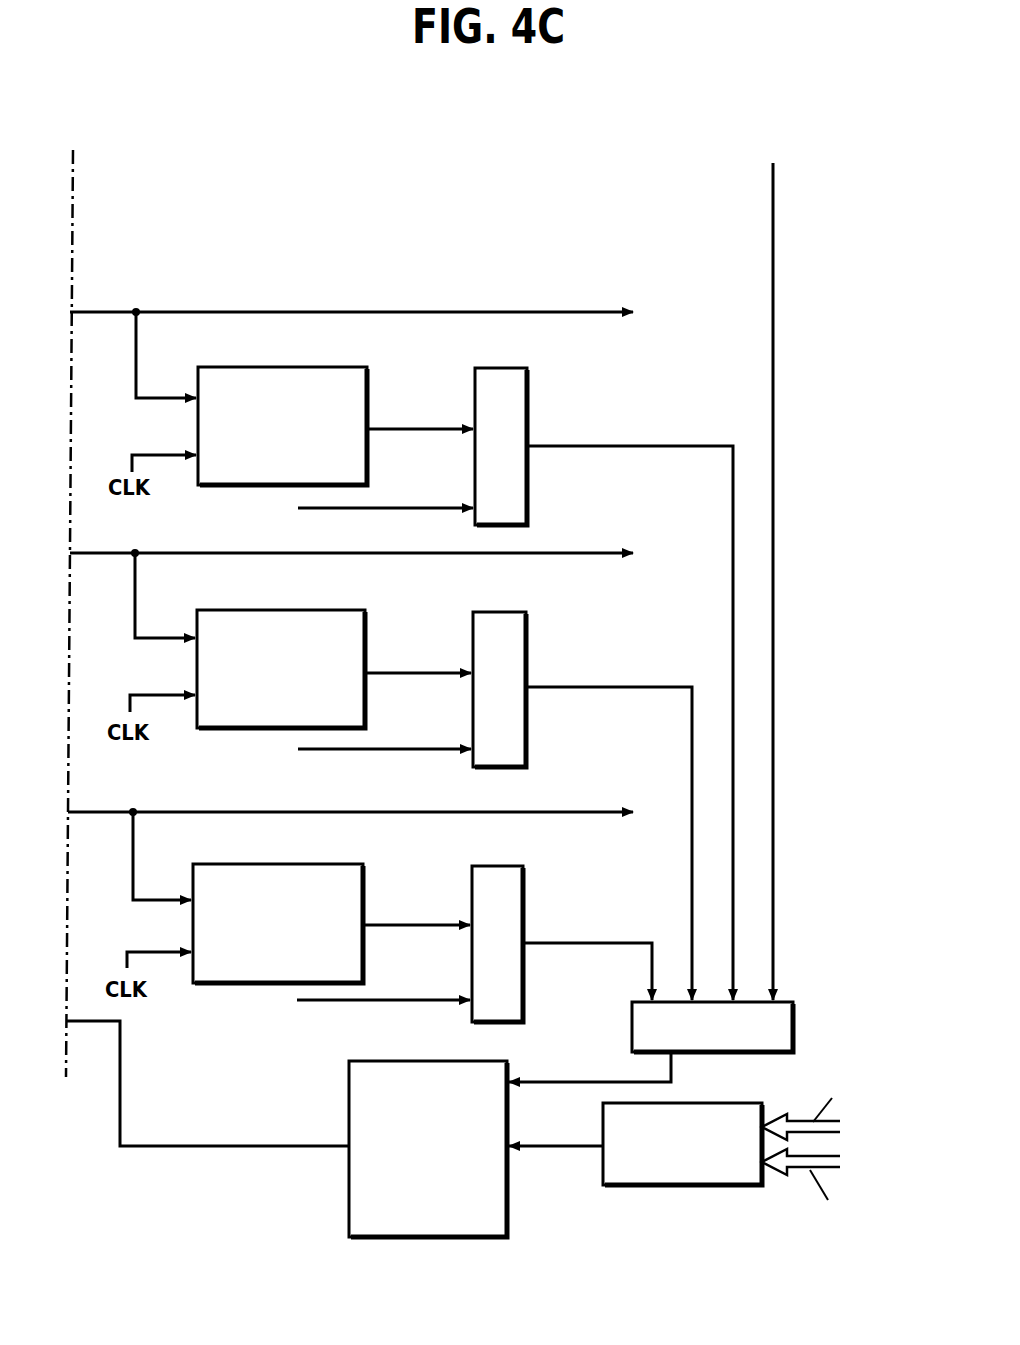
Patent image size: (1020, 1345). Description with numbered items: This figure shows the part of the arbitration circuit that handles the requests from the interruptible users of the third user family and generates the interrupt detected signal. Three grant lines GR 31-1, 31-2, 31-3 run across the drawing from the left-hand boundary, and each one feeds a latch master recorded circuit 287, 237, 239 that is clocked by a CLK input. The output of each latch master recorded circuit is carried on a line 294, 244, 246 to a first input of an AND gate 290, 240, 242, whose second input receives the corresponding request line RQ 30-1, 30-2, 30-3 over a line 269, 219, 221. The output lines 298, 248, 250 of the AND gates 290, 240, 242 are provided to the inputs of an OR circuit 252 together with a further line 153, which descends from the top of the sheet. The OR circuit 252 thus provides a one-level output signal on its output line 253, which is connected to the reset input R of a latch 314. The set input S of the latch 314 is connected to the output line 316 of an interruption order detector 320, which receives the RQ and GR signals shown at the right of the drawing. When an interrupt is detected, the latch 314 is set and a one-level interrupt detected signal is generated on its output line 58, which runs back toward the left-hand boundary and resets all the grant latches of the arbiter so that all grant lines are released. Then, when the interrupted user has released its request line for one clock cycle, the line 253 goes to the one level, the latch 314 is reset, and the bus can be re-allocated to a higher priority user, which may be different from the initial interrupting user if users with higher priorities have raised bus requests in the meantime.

The line 153 is at (777, 240).
The GR grant line 31-1 is at (351, 297).
The GR grant line 31-2 is at (351, 539).
The GR grant line 31-3 is at (350, 798).
The RQ request line 30-1 is at (396, 525).
The RQ request line 30-2 is at (396, 775).
The RQ request line 30-3 is at (394, 1020).
The latch master recorded 287 is at (371, 392).
The latch output line 294 is at (398, 426).
The request input line 269 is at (398, 505).
The AND gate 290 is at (528, 391).
The output line 298 is at (623, 443).
The latch master recorded 237 is at (369, 637).
The latch output line 244 is at (396, 671).
The request input line 219 is at (395, 747).
The AND gate 240 is at (527, 634).
The output line 248 is at (623, 685).
The latch master recorded 239 is at (368, 890).
The latch output line 246 is at (395, 923).
The request input line 221 is at (394, 997).
The AND gate 242 is at (525, 886).
The output line 250 is at (587, 940).
The OR circuit 252 is at (795, 1015).
The output line 253 is at (553, 1080).
The latch 314 is at (508, 1213).
The output line 316 is at (538, 1143).
The output line 58 is at (163, 1143).
The interruption order detector 320 is at (650, 1187).